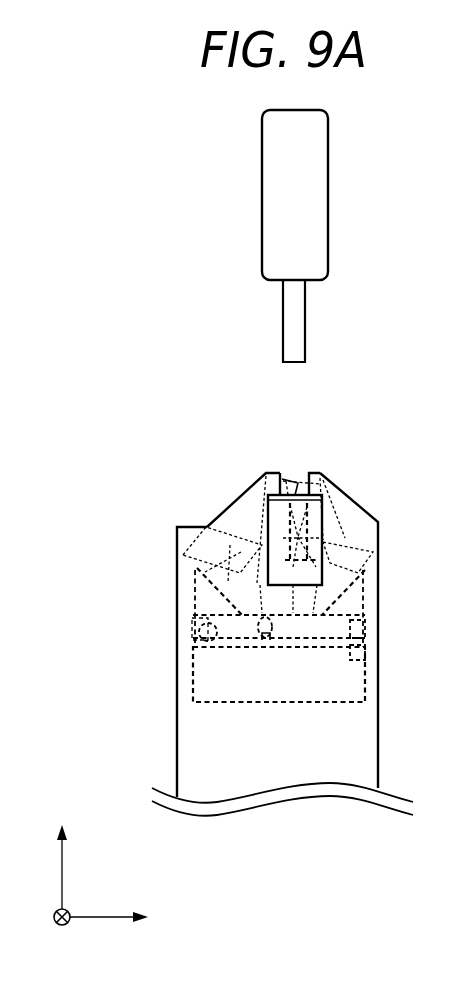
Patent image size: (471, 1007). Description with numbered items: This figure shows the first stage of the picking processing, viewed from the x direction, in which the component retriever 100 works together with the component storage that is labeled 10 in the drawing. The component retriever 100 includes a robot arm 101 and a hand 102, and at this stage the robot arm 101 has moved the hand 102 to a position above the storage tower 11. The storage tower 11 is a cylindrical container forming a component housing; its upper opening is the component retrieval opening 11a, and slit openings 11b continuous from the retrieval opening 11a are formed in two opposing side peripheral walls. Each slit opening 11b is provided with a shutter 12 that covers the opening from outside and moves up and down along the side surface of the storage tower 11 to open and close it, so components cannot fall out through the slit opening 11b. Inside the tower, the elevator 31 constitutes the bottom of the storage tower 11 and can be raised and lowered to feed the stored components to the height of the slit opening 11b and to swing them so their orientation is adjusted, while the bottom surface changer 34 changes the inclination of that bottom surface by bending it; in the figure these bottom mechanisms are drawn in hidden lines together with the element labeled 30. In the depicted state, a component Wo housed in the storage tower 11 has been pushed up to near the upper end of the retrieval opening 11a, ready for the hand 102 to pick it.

The component retriever 100 is at (171, 167).
The robot arm 101 is at (328, 183).
The hand 102 is at (305, 312).
The nozzle head 10 is at (138, 405).
The storage tower 11 is at (177, 662).
The component retrieval opening 11a is at (238, 498).
The slit opening 11b is at (298, 477).
The component Wo is at (280, 473).
The shutter 12 is at (322, 540).
The internal assembly 30 is at (273, 635).
The bottom surface changer 34 is at (277, 615).
The elevator 31 is at (378, 681).